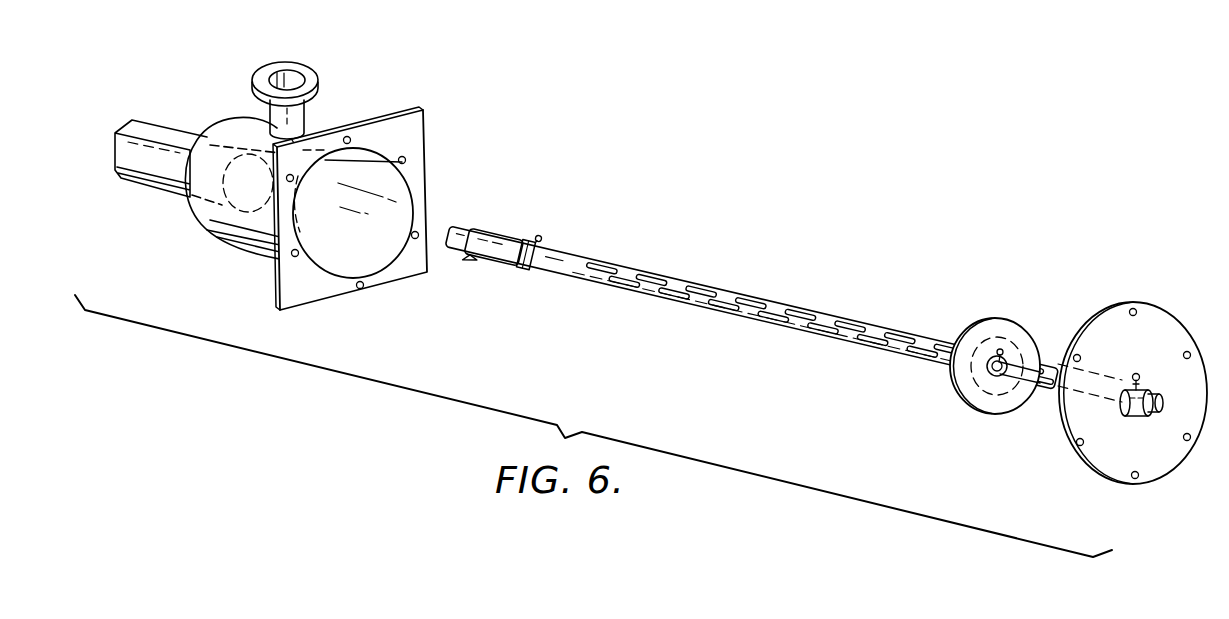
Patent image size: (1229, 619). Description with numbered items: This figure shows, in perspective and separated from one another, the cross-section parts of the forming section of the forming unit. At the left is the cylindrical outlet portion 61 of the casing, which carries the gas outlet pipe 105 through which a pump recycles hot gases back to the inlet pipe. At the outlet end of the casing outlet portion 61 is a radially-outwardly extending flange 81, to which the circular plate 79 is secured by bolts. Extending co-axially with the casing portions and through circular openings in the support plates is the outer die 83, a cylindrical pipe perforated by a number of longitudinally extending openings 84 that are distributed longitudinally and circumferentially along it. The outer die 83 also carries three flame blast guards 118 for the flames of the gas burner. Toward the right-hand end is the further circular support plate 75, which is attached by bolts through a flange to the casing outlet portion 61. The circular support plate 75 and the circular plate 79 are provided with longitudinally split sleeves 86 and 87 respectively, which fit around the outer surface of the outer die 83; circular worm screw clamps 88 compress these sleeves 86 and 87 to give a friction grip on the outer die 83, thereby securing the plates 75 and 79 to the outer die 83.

The cylindrical outlet portion 61 is at (212, 260).
The gas outlet pipe 105 is at (300, 117).
The radially-outwardly extending flange 81 is at (410, 135).
The flame blast guard 118 is at (497, 232).
The outer die 83 is at (570, 258).
The longitudinally extending openings 84 is at (705, 298).
The circular support plate 75 is at (1012, 330).
The longitudinally split sleeve 86 is at (985, 380).
The circular worm screw clamp 88 is at (1003, 352).
The circular plate 79 is at (1155, 326).
The longitudinally split sleeve 87 is at (1127, 416).